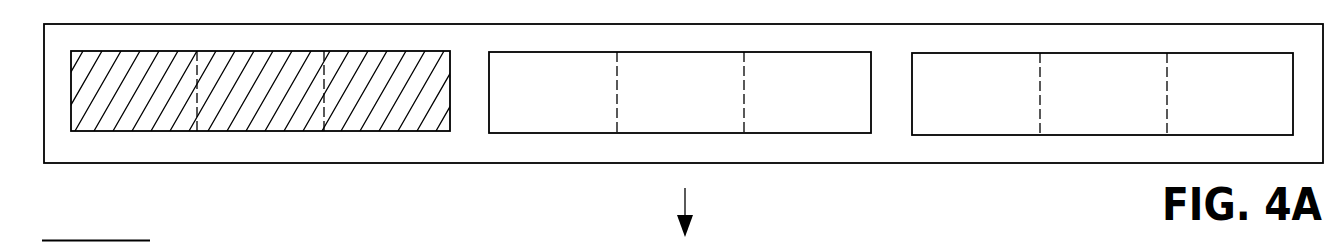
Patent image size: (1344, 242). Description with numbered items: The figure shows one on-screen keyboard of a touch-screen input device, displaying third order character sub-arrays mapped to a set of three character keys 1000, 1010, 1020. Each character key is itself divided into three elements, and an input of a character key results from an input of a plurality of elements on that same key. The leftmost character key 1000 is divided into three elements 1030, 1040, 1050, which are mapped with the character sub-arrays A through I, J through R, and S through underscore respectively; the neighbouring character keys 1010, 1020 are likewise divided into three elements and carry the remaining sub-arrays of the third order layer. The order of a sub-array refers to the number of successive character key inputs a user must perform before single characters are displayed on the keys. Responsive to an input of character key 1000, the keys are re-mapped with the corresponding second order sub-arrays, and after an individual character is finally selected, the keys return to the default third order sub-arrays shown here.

The character key 1000 is at (267, 132).
The character key 1010 is at (659, 152).
The character key 1020 is at (1103, 152).
The element 1030 is at (113, 120).
The element 1040 is at (247, 120).
The element 1050 is at (356, 120).